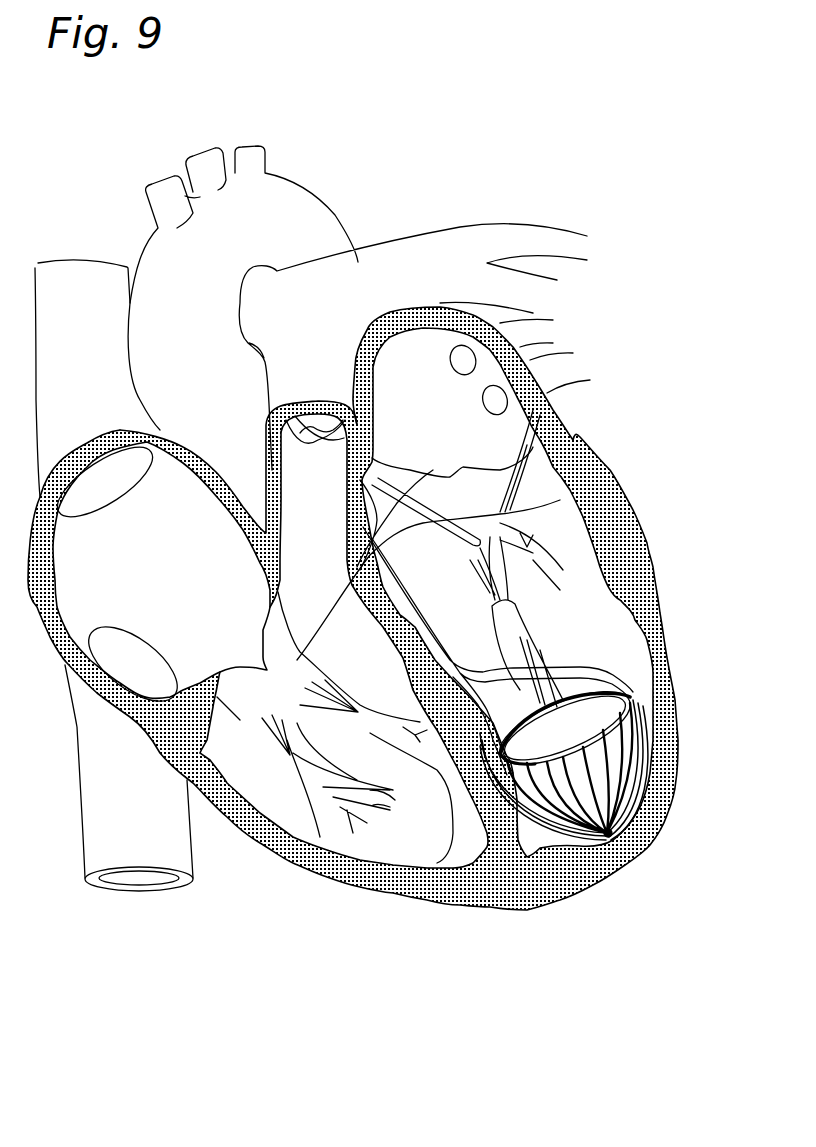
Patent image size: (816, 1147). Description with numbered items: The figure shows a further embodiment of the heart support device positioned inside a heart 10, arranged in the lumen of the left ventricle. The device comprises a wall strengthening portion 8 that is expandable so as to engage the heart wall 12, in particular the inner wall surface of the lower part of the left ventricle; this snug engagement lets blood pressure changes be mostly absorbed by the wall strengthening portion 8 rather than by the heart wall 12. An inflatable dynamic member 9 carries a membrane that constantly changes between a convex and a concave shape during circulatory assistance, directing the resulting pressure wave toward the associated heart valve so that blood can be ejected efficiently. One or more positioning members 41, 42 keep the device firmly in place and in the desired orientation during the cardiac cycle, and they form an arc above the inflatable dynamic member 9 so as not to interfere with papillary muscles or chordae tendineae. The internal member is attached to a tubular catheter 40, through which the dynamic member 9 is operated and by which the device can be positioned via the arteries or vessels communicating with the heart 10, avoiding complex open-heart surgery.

The heart 10 is at (508, 208).
The heart wall 12 is at (643, 547).
The catheter 40 is at (560, 500).
The positioning member 41 is at (593, 653).
The positioning member 42 is at (547, 677).
The wall strengthening portion 8 is at (610, 842).
The inflatable dynamic member 9 is at (517, 800).